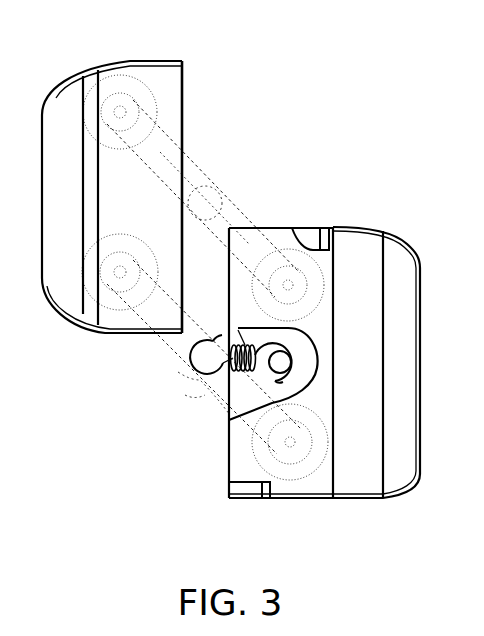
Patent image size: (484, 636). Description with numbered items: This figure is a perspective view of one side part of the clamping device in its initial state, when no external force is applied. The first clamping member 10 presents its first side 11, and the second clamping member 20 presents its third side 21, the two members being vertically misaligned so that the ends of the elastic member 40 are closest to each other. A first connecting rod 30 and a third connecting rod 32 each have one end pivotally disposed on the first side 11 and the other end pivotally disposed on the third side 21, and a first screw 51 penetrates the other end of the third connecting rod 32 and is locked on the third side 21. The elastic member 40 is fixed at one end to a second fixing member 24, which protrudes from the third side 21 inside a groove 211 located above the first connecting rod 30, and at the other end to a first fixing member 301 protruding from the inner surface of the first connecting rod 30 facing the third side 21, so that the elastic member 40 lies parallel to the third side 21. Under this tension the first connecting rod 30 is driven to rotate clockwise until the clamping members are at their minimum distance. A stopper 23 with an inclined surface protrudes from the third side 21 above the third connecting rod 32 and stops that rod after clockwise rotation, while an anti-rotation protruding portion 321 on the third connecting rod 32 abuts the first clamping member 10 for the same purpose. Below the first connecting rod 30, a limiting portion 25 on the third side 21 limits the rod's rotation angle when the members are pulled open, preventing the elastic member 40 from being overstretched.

The first clamping member 10 is at (124, 60).
The first side 11 is at (156, 67).
The second clamping member 20 is at (369, 228).
The third side 21 is at (318, 482).
The groove 211 is at (233, 396).
The stopper 23 is at (312, 233).
The second fixing member 24 is at (286, 468).
The limiting portion 25 is at (247, 490).
The first connecting rod 30 is at (121, 334).
The first fixing member 301 is at (178, 378).
The third connecting rod 32 is at (195, 140).
The anti-rotation protruding portion 321 is at (232, 165).
The elastic member 40 is at (196, 375).
The first screw 51 is at (283, 245).